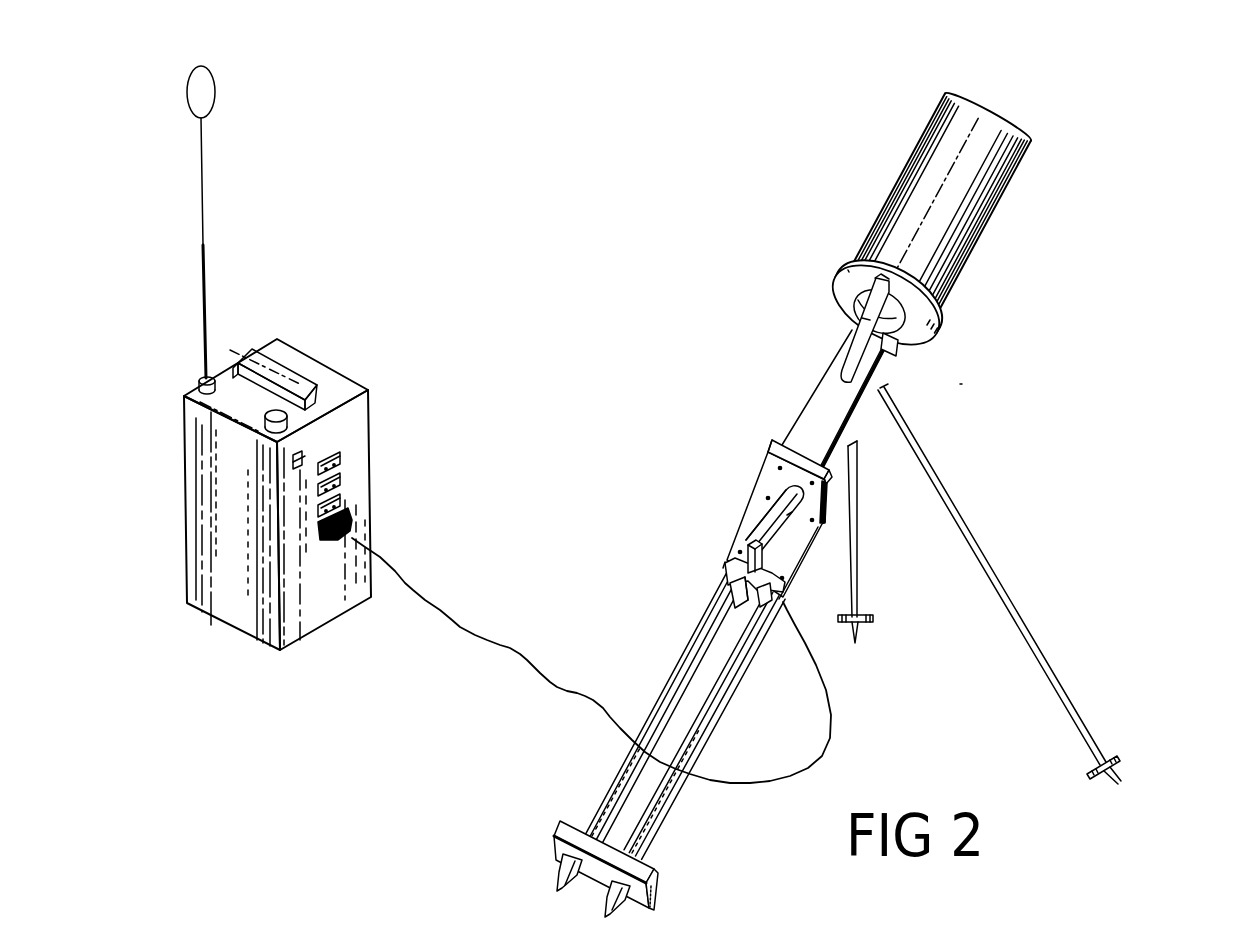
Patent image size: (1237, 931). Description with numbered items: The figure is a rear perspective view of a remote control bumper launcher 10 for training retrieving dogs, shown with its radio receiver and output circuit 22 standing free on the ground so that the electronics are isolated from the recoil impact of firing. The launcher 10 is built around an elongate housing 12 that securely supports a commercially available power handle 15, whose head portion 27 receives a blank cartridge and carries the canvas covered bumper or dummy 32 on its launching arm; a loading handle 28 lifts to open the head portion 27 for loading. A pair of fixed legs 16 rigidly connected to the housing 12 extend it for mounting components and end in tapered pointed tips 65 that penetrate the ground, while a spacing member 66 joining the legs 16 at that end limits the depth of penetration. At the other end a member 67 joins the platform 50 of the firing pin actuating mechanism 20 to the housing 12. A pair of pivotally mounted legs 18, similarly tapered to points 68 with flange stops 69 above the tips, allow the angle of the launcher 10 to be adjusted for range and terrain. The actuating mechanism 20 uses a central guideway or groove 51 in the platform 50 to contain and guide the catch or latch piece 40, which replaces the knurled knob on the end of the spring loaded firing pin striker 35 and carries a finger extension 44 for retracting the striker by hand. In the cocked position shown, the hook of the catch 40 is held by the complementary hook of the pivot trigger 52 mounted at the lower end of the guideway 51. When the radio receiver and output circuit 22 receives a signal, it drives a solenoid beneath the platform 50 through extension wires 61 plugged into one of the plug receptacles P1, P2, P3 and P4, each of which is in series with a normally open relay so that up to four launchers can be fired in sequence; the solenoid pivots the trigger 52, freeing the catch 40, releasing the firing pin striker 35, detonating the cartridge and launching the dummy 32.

The bumper launcher 10 is at (975, 382).
The elongate housing 12 is at (828, 373).
The power handle 15 is at (822, 273).
The fixed legs 16 is at (617, 757).
The pivotally mounted legs 18 is at (860, 572).
The firing pin actuating mechanism 20 is at (713, 532).
The radio receiver and output circuit 22 is at (372, 402).
The head portion 27 is at (938, 318).
The loading handle 28 is at (857, 348).
The bumper or dummy 32 is at (907, 118).
The firing pin striker 35 is at (787, 515).
The catch or latch piece 40 is at (760, 566).
The finger extension 44 is at (733, 530).
The platform 50 is at (795, 548).
The guideway or groove 51 is at (750, 515).
The pivot trigger 52 is at (743, 590).
The extension wires 61 is at (543, 670).
The ground spikes 65 is at (557, 890).
The spacing member 66 is at (658, 885).
The member 67 is at (782, 443).
The points 68 is at (1118, 783).
The flange stops 69 is at (1120, 753).
The plug receptacle P1 is at (343, 455).
The plug receptacle P2 is at (343, 477).
The plug receptacle P3 is at (343, 500).
The plug receptacle P4 is at (350, 512).